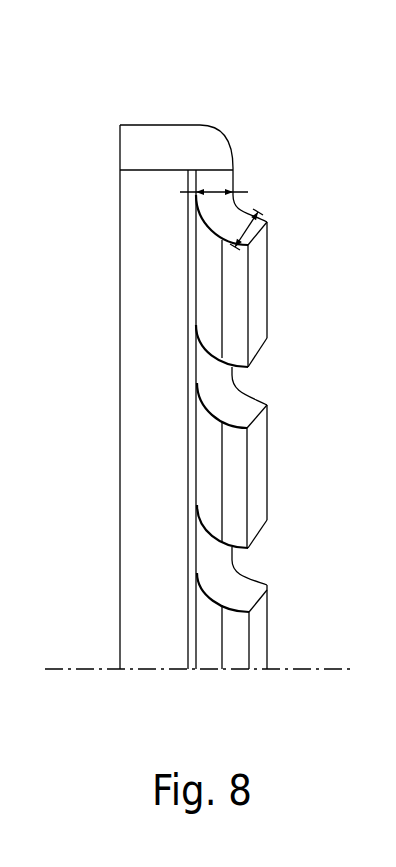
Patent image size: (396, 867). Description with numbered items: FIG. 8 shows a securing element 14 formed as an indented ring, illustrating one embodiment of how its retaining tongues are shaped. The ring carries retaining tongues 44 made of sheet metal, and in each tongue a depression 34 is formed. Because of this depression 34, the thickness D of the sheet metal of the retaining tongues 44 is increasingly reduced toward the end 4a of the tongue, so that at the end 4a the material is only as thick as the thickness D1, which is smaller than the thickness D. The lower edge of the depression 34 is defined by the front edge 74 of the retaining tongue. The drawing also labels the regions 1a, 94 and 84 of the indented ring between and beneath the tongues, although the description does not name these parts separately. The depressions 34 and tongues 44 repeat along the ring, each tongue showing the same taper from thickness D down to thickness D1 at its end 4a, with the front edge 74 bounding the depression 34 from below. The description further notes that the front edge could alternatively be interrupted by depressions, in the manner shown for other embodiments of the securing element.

The securing element 14 is at (293, 75).
The tooth root 1a is at (252, 380).
The concave tooth flank 94 is at (210, 263).
The tooth underside 84 is at (257, 325).
The depression 34 is at (270, 255).
The end 4a is at (257, 275).
The retaining tongue 44 is at (257, 298).
The front edge 74 is at (238, 325).
The thickness D is at (220, 187).
The thickness D1 is at (262, 209).